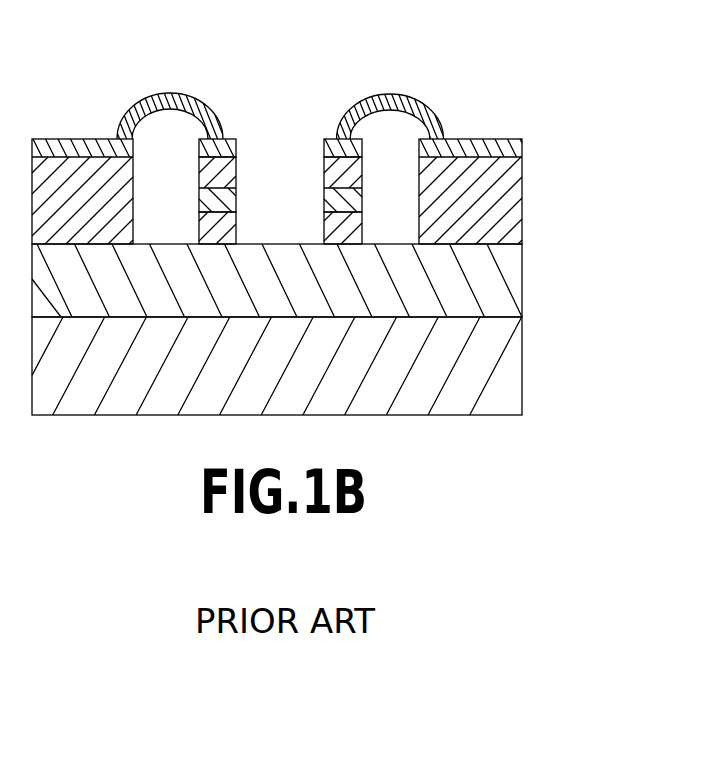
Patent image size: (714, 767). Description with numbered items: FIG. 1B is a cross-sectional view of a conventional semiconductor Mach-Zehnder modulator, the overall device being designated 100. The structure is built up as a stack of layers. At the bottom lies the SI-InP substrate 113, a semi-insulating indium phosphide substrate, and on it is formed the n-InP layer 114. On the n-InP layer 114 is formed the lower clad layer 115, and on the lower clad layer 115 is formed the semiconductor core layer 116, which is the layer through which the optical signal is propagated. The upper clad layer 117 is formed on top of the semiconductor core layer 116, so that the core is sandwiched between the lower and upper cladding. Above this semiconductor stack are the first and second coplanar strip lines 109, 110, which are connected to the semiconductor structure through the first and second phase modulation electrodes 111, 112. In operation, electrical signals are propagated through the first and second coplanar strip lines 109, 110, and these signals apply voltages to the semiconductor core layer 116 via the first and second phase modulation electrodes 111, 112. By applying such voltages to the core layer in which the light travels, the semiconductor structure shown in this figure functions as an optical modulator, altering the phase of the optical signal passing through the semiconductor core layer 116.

The semiconductor device (prior art) 100 is at (558, 92).
The first coplanar strip line 109 is at (488, 139).
The second coplanar strip line 110 is at (82, 142).
The first phase modulation electrode 111 is at (335, 140).
The second phase modulation electrode 112 is at (227, 140).
The SI-InP substrate 113 is at (522, 367).
The n-InP layer 114 is at (522, 282).
The lower clad layer 115 is at (236, 227).
The semiconductor core layer 116 is at (199, 197).
The upper clad layer 117 is at (238, 158).